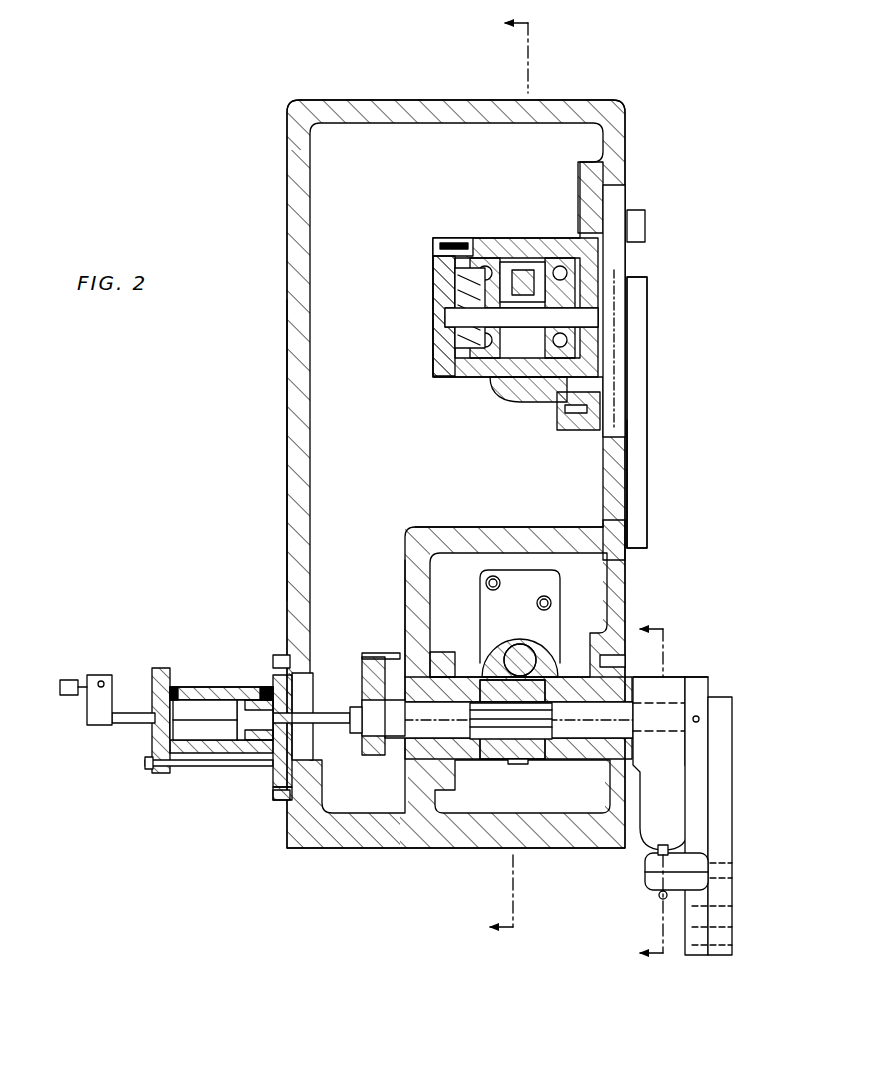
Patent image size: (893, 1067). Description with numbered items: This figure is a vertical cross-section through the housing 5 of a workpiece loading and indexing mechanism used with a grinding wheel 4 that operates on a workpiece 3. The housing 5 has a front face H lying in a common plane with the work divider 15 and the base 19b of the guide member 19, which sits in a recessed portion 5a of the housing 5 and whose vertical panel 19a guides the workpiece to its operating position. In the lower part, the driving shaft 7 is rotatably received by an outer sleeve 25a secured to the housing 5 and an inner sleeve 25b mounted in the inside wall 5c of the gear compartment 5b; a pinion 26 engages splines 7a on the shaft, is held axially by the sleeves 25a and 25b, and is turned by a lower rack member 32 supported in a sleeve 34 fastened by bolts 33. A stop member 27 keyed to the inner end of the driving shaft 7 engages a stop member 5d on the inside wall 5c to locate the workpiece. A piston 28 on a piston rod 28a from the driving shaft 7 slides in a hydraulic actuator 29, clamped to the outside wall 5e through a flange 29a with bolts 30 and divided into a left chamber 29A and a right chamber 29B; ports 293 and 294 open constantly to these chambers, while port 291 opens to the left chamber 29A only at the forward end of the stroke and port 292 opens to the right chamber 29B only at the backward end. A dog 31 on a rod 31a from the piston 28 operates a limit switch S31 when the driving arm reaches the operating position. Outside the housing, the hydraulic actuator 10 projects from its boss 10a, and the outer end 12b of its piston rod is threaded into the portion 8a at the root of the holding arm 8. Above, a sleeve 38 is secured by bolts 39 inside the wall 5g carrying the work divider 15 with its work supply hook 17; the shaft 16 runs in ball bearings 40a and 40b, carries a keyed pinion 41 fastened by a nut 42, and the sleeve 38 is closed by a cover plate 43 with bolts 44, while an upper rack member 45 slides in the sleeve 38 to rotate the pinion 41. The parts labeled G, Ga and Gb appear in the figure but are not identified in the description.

The workpiece 3 is at (500, 477).
The grinding wheel 4 is at (642, 793).
The housing 5 is at (588, 88).
The front face of the housing H is at (627, 132).
The recessed portion 5a is at (627, 530).
The gear compartment 5b is at (466, 527).
The inside wall of the gear compartment 5c is at (405, 566).
The stop member 5d is at (385, 654).
The outside wall of the housing 5e is at (287, 462).
The wall 5g is at (582, 171).
The driving shaft 7 is at (401, 738).
The splines 7a is at (477, 741).
The holding arm 8 is at (733, 805).
The portion rotatably extended from the root of the holding arm 8a is at (648, 880).
The hydraulic actuator 10 is at (641, 835).
The boss 10a is at (668, 682).
The outer end of the piston rod 12b is at (659, 897).
The work divider 15 is at (620, 268).
The shaft 16 is at (440, 345).
The work supply hook 17 is at (640, 224).
The guide member 19 is at (683, 517).
The vertical panel 19a is at (647, 331).
The base of the guide member 19b is at (628, 470).
The outer sleeve 25a is at (575, 750).
The inner sleeve 25b is at (441, 656).
The pinion 26 is at (515, 764).
The stop member 27 is at (369, 755).
The piston 28 is at (208, 740).
The piston rod 28a is at (340, 701).
The hydraulic actuator 29 is at (180, 760).
The left chamber 29A is at (152, 745).
The right chamber 29B is at (255, 767).
The flange 29a is at (280, 800).
The port 291 is at (200, 688).
The port 292 is at (243, 700).
The port 293 is at (176, 688).
The port 294 is at (266, 688).
The bolts 30 is at (281, 655).
The dog 31 is at (94, 675).
The rod 31a is at (133, 714).
The limit switch S31 is at (66, 680).
The lower rack member 32 is at (500, 632).
The bolts 33 is at (486, 584).
The sleeve 34 is at (556, 640).
The sleeve 38 is at (510, 240).
The bolts 39 is at (566, 420).
The ball bearing 40a is at (485, 266).
The ball bearing 40b is at (560, 266).
The pinion 41 is at (528, 290).
The nut 42 is at (440, 276).
The cover plate 43 is at (445, 312).
The bolts 44 is at (440, 250).
The upper rack member 45 is at (525, 390).
The guide plate G is at (700, 955).
The guide plate upper end Ga is at (704, 690).
The guide plate lower end Gb is at (735, 928).